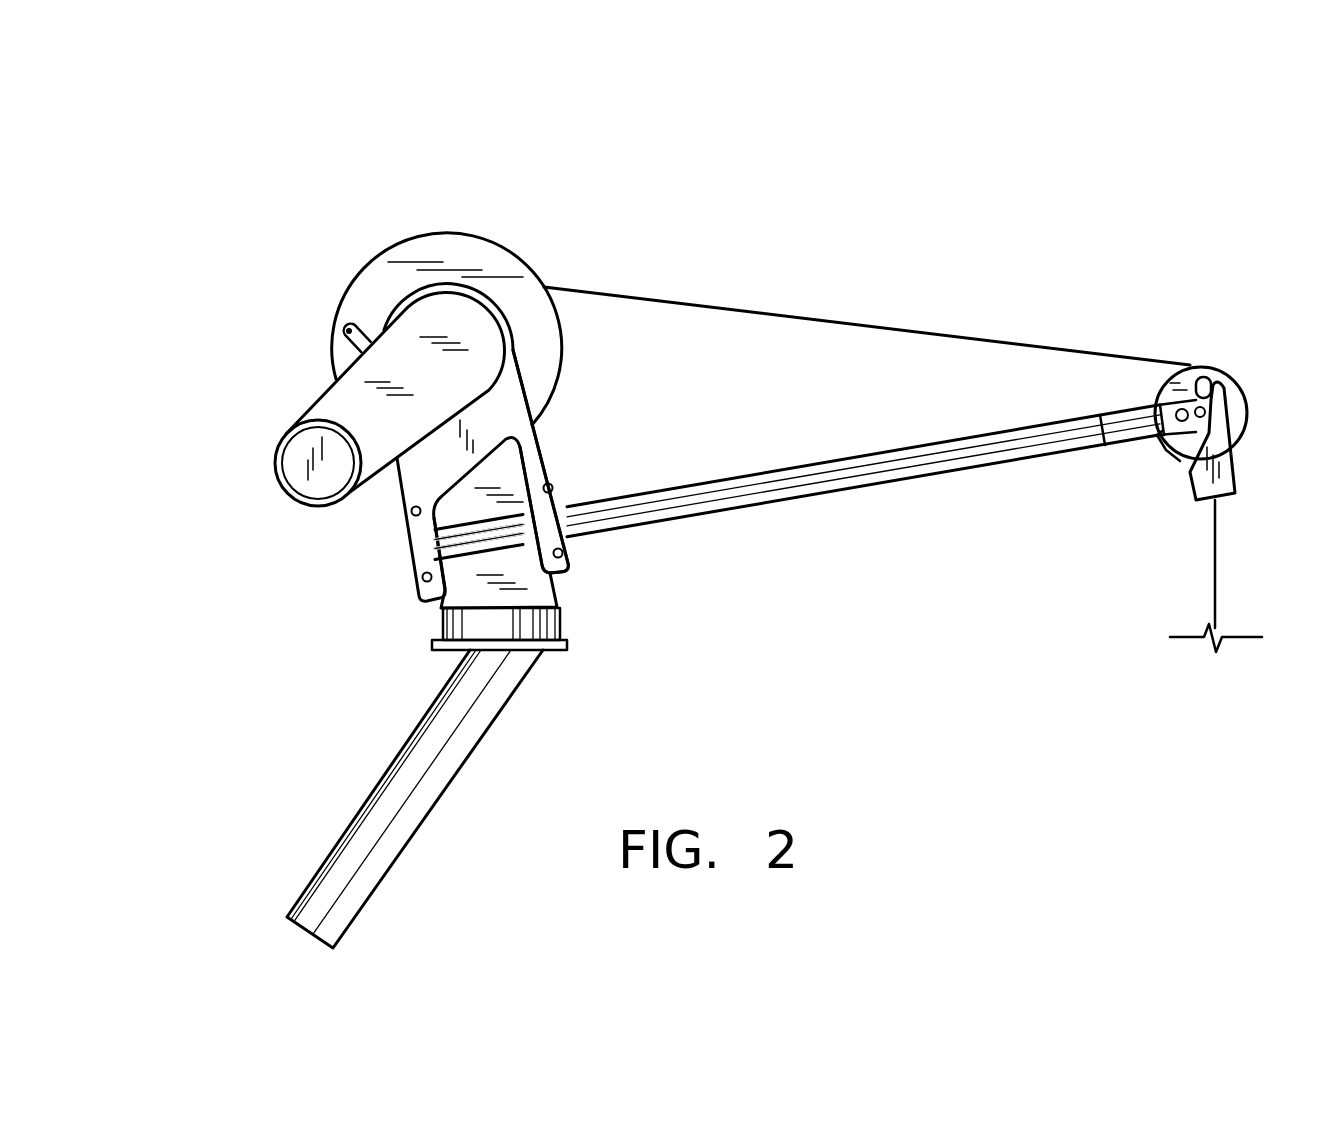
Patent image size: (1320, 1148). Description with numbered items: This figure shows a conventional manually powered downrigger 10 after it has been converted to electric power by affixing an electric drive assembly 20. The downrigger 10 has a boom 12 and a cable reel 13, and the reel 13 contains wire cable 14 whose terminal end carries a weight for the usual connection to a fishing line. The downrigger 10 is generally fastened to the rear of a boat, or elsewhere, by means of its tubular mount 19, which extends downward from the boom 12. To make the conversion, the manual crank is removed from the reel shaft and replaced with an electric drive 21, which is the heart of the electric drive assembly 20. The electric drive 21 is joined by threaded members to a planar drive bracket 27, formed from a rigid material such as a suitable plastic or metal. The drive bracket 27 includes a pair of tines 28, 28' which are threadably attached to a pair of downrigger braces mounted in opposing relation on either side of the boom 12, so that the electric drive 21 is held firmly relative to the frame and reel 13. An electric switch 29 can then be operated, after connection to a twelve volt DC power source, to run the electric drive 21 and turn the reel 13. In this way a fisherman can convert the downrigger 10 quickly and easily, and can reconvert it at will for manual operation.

The downrigger 10 is at (713, 519).
The boom 12 is at (817, 467).
The cable reel 13 is at (438, 247).
The wire cable 14 is at (914, 332).
The tubular mount 19 is at (407, 848).
The electric drive assembly 20 is at (335, 426).
The electric drive 21 is at (288, 492).
The drive bracket 27 is at (481, 467).
The tine 28 is at (570, 461).
The tine 28' is at (390, 529).
The electric switch 29 is at (316, 333).